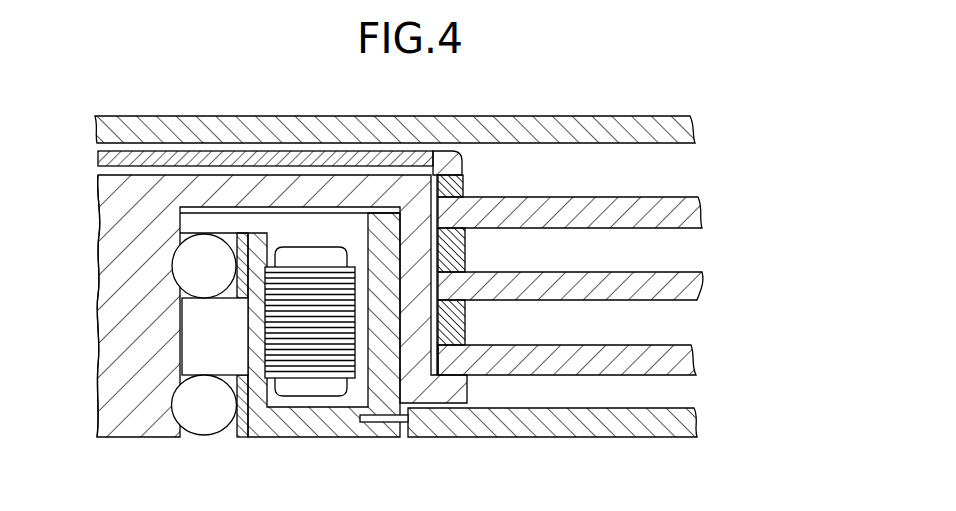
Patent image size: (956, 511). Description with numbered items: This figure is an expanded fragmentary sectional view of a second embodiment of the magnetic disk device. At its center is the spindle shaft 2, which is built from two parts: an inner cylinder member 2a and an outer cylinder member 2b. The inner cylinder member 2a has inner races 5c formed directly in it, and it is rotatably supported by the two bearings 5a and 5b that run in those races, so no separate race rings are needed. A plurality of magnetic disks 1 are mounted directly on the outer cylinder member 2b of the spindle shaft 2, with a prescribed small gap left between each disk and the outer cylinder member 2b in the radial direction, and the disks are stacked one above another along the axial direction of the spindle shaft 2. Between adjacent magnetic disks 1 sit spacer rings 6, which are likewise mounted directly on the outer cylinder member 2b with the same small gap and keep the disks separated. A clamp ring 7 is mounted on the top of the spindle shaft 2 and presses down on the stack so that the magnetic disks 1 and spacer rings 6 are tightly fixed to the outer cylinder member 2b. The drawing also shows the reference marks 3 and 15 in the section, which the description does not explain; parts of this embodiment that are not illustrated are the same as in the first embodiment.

The magnetic disks 1 is at (682, 197).
The spindle shaft 2 is at (297, 182).
The inner cylinder member 2a is at (107, 283).
The outer cylinder member 2b is at (464, 262).
The guide plate 3 is at (523, 116).
The bearing 5a is at (207, 426).
The bearing 5b is at (190, 254).
The inner races 5c is at (178, 435).
The spacer rings 6 is at (464, 185).
The clamp ring 7 is at (98, 160).
The gap 15 is at (440, 355).